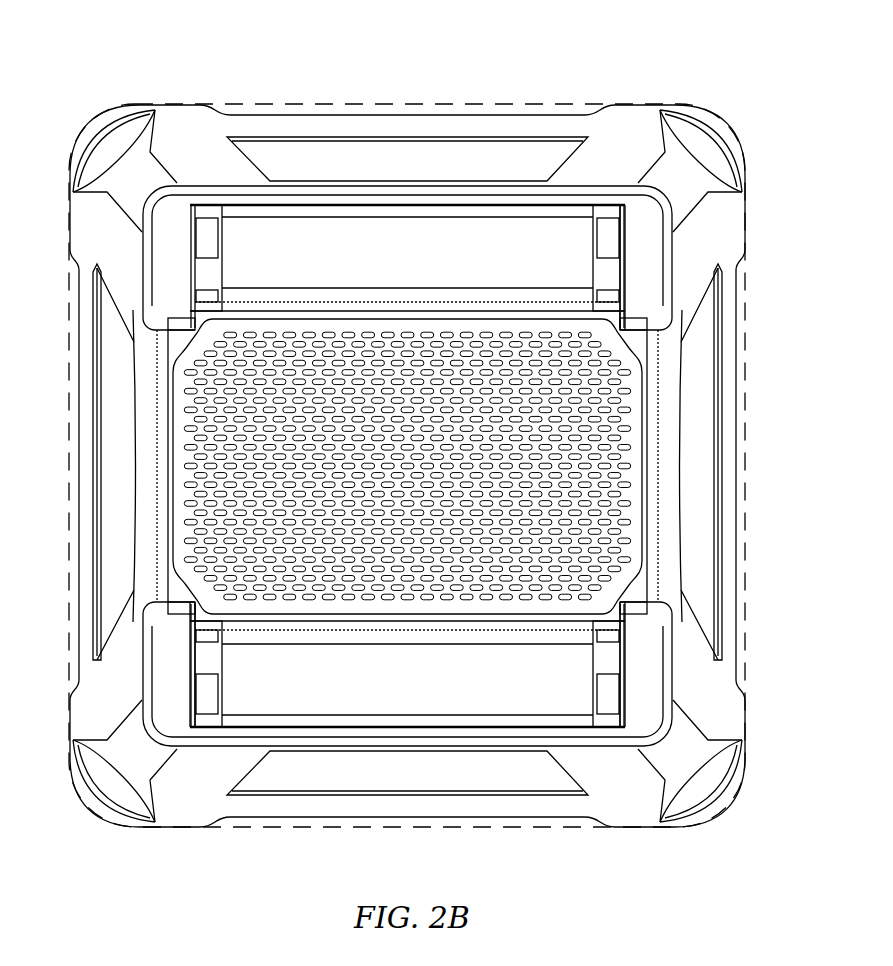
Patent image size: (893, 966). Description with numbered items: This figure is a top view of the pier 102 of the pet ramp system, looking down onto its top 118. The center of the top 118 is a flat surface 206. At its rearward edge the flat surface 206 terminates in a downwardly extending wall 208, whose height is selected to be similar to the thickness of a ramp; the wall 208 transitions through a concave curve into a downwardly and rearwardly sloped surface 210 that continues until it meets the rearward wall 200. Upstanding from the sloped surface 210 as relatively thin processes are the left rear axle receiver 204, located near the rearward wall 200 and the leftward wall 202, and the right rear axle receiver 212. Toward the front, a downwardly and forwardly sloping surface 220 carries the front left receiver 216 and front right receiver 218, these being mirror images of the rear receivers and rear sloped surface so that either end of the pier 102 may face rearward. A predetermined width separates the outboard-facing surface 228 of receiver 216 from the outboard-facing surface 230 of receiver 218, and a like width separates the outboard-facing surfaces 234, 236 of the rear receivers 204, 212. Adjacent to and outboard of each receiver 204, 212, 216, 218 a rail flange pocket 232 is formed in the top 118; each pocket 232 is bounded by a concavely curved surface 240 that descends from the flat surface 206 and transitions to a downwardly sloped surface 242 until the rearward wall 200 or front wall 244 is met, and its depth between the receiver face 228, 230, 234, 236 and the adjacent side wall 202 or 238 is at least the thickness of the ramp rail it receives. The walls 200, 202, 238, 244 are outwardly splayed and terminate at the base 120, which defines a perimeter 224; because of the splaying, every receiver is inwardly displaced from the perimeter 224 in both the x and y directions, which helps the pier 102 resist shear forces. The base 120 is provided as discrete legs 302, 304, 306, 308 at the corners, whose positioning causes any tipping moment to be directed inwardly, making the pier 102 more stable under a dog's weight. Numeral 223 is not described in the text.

The pier 102 is at (536, 78).
The top 118 is at (314, 345).
The base 120 is at (654, 112).
The rearward wall 200 is at (186, 820).
The leftward wall 202 is at (125, 645).
The first (left rear) axle receiver 204 is at (218, 662).
The flat surface 206 is at (630, 468).
The downwardly extending wall 208 is at (343, 638).
The downwardly and rearwardly sloped surface 210 is at (390, 690).
The right rear axle receiver 212 is at (597, 662).
The front left receiver 216 is at (218, 272).
The front right receiver 218 is at (597, 272).
The downwardly and forwardly sloping surface 220 is at (390, 262).
The end cap 223 is at (190, 692).
The perimeter 224 is at (68, 485).
The outboard-facing surface 228 is at (190, 238).
The outboard-facing surface 230 is at (625, 238).
The rail flange pocket 232 is at (176, 308).
The outboard-facing surface 234 is at (162, 666).
The outboard-facing surface 236 is at (625, 705).
The pier side wall 238 is at (675, 420).
The concavely curved surface 240 is at (128, 315).
The downwardly sloped surface 242 is at (160, 200).
The front wall 244 is at (203, 130).
The leg 302 is at (112, 797).
The leg 304 is at (706, 797).
The leg 306 is at (708, 140).
The leg 308 is at (112, 135).